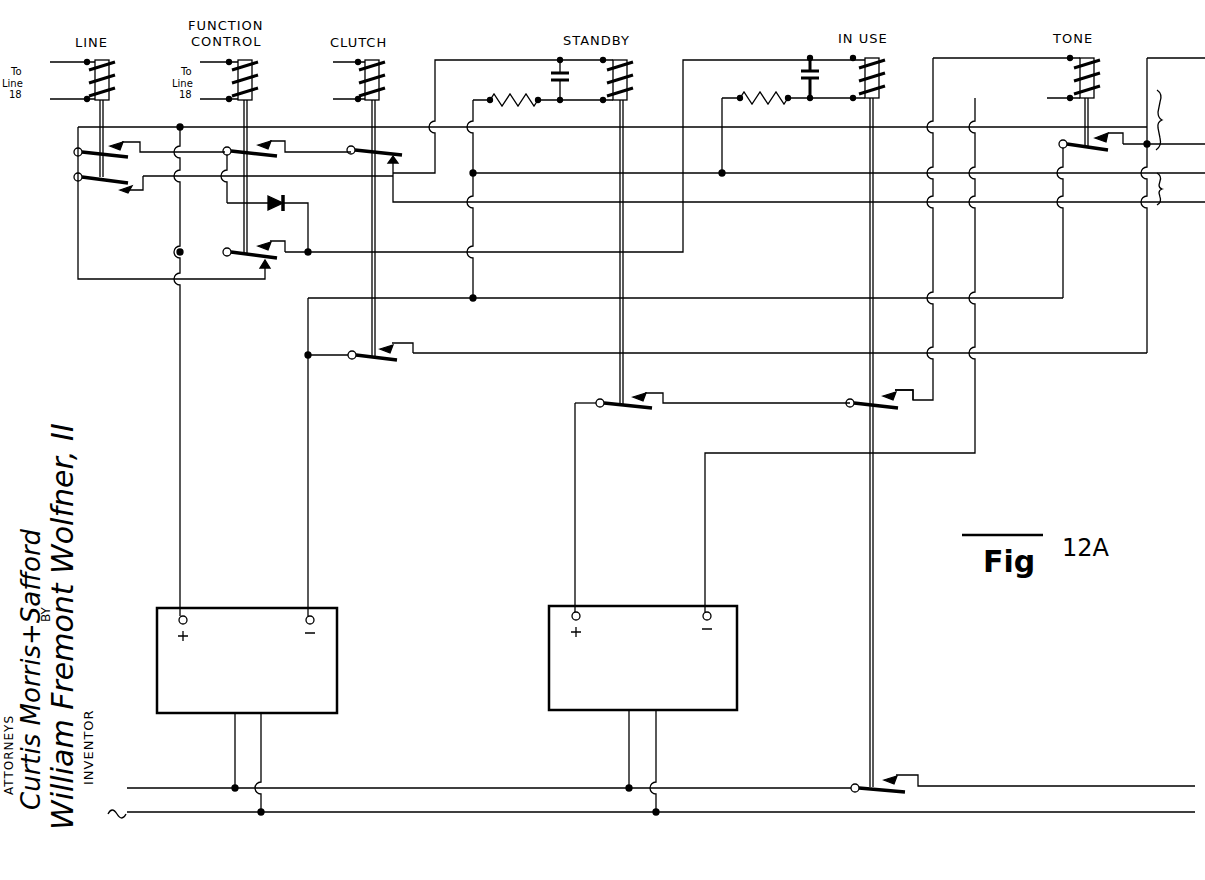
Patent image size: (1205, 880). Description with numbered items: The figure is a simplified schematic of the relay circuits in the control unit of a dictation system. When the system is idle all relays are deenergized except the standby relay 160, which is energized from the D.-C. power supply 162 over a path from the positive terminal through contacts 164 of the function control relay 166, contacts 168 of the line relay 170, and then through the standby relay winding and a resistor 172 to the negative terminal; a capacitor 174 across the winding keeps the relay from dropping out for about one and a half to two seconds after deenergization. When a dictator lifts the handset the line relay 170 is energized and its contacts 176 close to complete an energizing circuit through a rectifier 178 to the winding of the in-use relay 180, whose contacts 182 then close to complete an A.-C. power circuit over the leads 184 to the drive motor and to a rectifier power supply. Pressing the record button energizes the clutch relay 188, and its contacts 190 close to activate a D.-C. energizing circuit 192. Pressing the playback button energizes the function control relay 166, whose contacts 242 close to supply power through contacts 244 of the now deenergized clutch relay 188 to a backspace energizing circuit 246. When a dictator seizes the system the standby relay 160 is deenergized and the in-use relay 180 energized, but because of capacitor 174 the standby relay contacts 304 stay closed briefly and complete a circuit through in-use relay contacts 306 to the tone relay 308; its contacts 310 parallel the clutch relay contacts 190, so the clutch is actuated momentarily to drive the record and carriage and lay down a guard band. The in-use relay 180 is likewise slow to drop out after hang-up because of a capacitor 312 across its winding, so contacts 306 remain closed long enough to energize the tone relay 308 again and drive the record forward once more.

The standby relay 160 is at (636, 83).
The D.-C. power supply 162 is at (328, 656).
The contacts of function control relay 164 is at (280, 262).
The function control relay 166 is at (265, 86).
The contacts of line relay 168 is at (119, 188).
The line relay 170 is at (122, 82).
The resistor 172 is at (510, 96).
The capacitor 174 is at (552, 78).
The contacts of line relay 176 is at (129, 153).
The rectifier 178 is at (275, 190).
The in-use relay 180 is at (886, 81).
The contacts of in-use relay 182 is at (888, 774).
The leads 184 is at (1136, 786).
The clutch relay 188 is at (388, 82).
The contacts of clutch relay 190 is at (400, 362).
The D.-C. energizing circuit 192 is at (1176, 120).
The contacts of function control relay 242 is at (280, 151).
The contacts of clutch relay 244 is at (392, 158).
The backspace energizing circuit 246 is at (1177, 189).
The standby relay contacts 304 is at (655, 410).
The in-use relay contacts 306 is at (900, 410).
The tone relay 308 is at (1100, 82).
The contacts of tone relay 310 is at (1107, 150).
The capacitor 312 is at (802, 72).